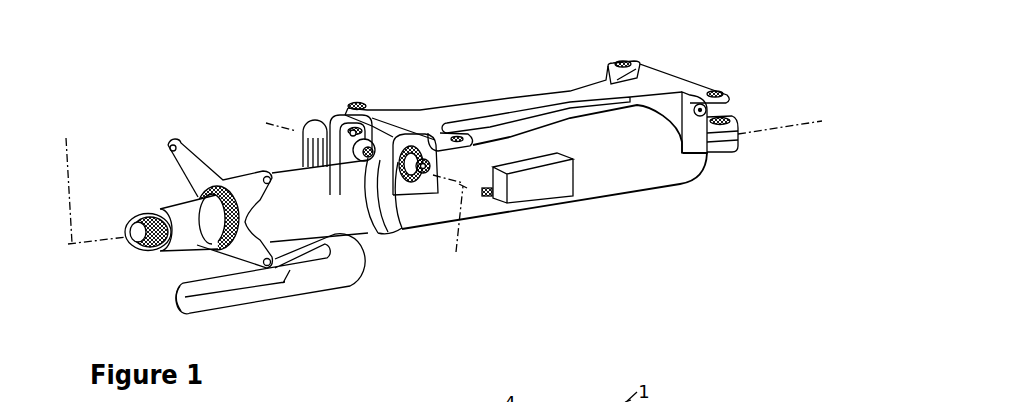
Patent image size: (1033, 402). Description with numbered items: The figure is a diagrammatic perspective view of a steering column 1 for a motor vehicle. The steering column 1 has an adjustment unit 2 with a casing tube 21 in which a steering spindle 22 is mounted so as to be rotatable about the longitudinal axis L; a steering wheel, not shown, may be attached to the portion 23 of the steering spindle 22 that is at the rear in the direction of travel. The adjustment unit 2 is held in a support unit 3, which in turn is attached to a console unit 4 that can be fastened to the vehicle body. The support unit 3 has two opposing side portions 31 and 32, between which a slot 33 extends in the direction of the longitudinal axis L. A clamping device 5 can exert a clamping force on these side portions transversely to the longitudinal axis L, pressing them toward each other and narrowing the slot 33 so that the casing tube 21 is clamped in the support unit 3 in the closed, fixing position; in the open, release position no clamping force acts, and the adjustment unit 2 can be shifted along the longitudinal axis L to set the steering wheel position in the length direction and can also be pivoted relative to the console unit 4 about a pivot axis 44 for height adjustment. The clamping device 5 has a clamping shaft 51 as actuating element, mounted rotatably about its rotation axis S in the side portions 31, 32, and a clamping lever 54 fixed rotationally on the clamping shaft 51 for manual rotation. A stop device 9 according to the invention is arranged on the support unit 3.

The steering column 1 is at (489, 38).
The adjustment unit 2 is at (254, 152).
The casing tube 21 is at (350, 232).
The steering spindle 22 is at (187, 213).
The portion of the steering spindle 23 is at (141, 217).
The support unit 3 is at (633, 168).
The side portion 31 is at (355, 135).
The side portion 32 is at (386, 148).
The slot 33 is at (370, 140).
The console unit 4 is at (514, 100).
The pivot axis 44 is at (604, 78).
The clamping device 5 is at (298, 113).
The clamping shaft 51 is at (431, 175).
The clamping lever 54 is at (300, 285).
The stop device 9 is at (545, 217).
The rotation axis S is at (458, 228).
The longitudinal axis L is at (442, 180).